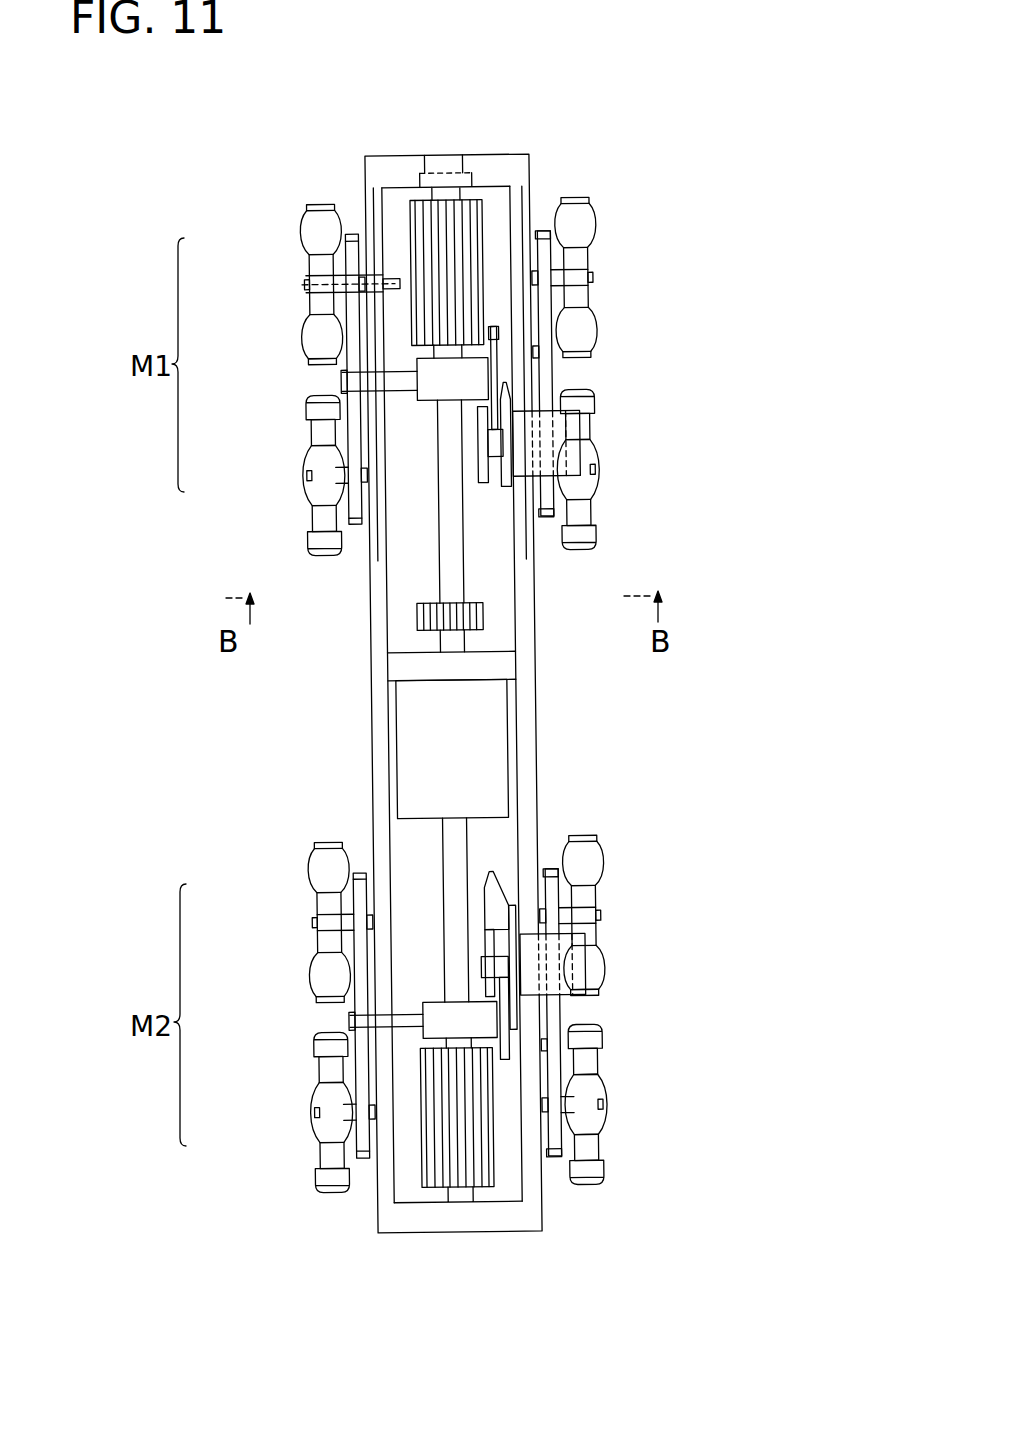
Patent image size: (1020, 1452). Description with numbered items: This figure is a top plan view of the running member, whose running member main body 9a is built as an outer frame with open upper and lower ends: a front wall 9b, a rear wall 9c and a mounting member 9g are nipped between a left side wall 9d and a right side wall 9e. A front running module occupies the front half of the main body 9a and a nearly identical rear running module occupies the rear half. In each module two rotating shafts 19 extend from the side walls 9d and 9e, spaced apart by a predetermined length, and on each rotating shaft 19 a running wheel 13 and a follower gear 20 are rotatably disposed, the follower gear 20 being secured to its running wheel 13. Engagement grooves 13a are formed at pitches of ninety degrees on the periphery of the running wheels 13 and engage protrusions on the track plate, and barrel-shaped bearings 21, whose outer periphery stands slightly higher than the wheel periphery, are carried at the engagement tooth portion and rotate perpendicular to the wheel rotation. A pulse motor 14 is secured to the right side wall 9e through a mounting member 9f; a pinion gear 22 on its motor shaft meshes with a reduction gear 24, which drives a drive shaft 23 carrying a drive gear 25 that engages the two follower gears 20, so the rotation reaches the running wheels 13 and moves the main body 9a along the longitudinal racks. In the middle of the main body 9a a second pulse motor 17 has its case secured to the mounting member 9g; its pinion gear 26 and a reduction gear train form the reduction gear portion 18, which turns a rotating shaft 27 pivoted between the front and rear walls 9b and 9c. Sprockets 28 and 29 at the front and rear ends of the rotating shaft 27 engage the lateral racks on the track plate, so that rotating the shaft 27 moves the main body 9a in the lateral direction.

The running member main body 9a is at (600, 145).
The front wall 9b is at (493, 172).
The rear wall 9c is at (502, 1222).
The left side wall 9d is at (374, 182).
The right side wall 9e is at (523, 200).
The mounting member 9f is at (508, 488).
The mounting member 9g is at (385, 667).
The running wheel 13 is at (461, 672).
The engagement groove 13a is at (576, 273).
The motor 14 is at (570, 456).
The motor 17 is at (487, 740).
The reduction gear portion 18 is at (430, 602).
The rotating shaft 19 is at (306, 283).
The follower gear 20 is at (353, 233).
The barrel-shaped bearing 21 is at (578, 232).
The pinion gear 22 is at (484, 448).
The drive shaft 23 is at (432, 390).
The reduction gear 24 is at (500, 340).
The drive gear 25 is at (347, 388).
The pinion gear 26 is at (449, 632).
The rotating shaft 27 is at (463, 582).
The sprocket 28 is at (437, 212).
The sprocket 29 is at (453, 1163).